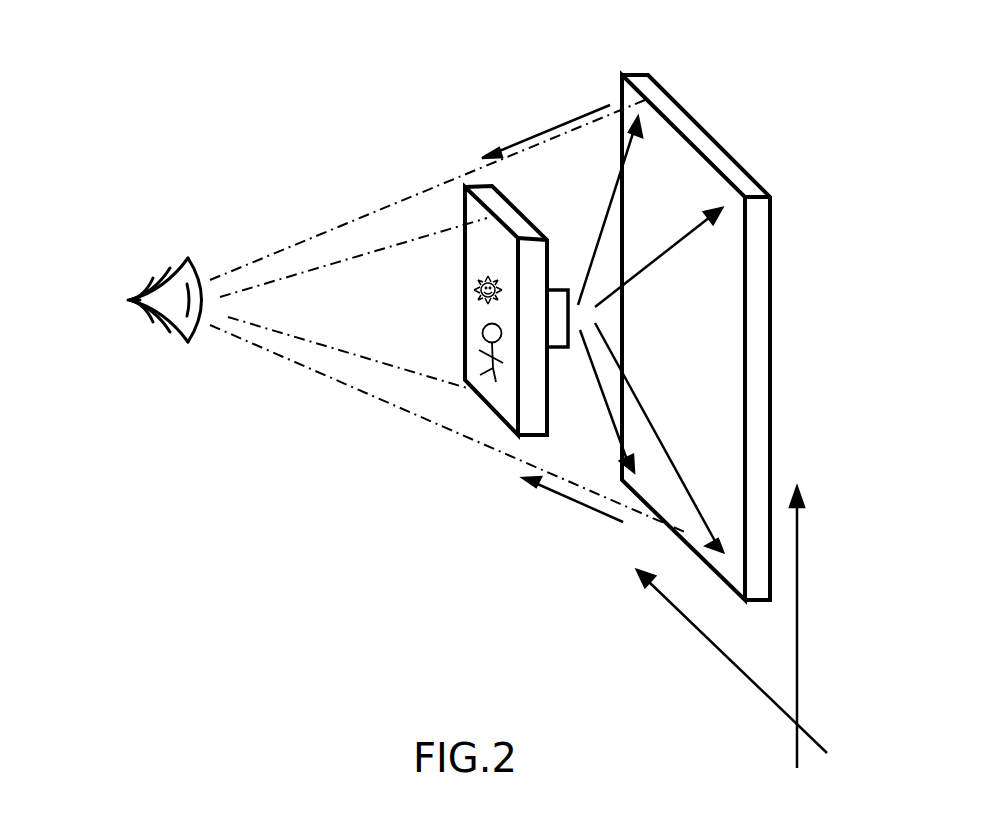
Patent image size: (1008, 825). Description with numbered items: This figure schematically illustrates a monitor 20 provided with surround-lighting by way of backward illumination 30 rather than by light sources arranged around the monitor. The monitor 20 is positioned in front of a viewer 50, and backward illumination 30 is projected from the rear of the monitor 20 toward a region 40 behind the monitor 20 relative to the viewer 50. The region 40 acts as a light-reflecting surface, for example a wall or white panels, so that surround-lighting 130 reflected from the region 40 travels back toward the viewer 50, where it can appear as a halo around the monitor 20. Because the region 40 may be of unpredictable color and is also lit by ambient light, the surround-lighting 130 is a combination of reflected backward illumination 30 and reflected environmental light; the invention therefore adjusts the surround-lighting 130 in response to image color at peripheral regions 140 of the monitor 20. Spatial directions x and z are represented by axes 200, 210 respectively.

The monitor 20 is at (499, 258).
The backward illumination 30 is at (647, 265).
The region behind the monitor 40 is at (687, 343).
The viewer 50 is at (178, 231).
The surround-lighting 130 is at (543, 132).
The peripheral regions of the monitor 140 is at (355, 257).
The x axis 200 is at (763, 698).
The z axis 210 is at (797, 570).